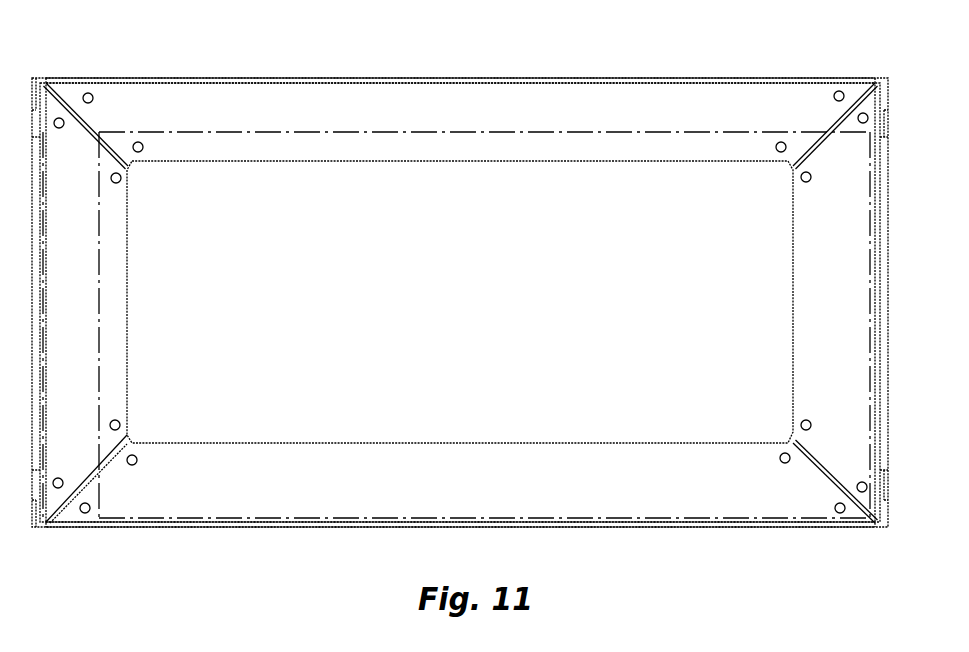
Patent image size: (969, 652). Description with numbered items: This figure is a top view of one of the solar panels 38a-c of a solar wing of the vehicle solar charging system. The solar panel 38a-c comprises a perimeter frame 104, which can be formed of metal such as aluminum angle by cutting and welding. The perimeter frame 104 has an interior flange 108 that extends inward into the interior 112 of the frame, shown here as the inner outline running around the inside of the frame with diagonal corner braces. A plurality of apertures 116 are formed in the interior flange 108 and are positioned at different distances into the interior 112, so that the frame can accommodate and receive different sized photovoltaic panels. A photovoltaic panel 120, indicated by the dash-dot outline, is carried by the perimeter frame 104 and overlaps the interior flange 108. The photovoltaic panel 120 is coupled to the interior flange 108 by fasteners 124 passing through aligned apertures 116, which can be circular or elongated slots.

The solar panels 38a-c is at (87, 522).
The perimeter frame 104 is at (280, 523).
The interior flange 108 is at (358, 108).
The interior 112 is at (610, 383).
The apertures 116 is at (90, 93).
The photovoltaic panel 120 is at (705, 132).
The fasteners 124 is at (142, 145).